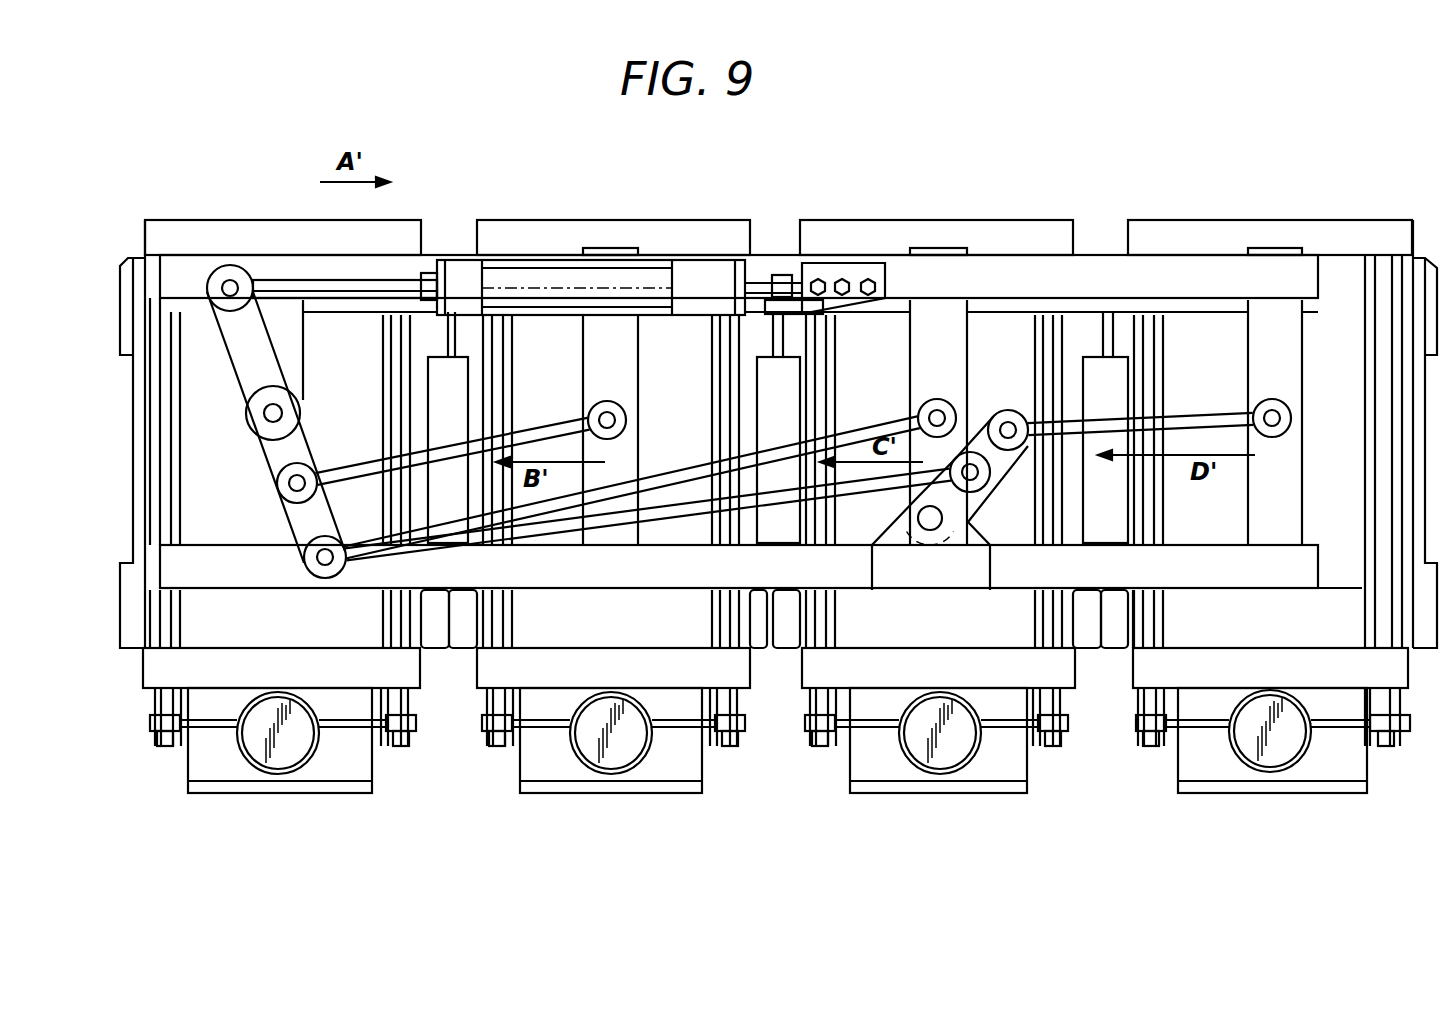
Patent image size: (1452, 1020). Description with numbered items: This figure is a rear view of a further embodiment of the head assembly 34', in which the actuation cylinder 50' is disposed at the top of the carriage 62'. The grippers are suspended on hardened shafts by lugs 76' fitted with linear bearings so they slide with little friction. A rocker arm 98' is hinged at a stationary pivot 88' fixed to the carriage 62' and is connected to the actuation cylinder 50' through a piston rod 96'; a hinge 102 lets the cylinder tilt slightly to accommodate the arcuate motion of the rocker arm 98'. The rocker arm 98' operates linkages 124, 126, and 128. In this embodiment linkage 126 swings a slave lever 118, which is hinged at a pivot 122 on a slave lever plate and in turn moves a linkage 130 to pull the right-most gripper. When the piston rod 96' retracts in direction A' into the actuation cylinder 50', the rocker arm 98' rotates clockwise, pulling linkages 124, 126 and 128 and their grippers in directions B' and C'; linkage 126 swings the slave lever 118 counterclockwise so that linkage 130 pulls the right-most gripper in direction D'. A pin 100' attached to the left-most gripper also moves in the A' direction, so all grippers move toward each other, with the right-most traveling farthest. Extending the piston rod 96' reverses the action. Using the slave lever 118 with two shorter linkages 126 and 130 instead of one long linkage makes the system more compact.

The head assembly 34' is at (879, 143).
The actuation cylinder 50' is at (583, 241).
The carriage 62' is at (739, 222).
The lugs 76' is at (778, 249).
The pivot 88' is at (186, 419).
The piston rod 96' is at (345, 233).
The rocker arm 98' is at (207, 435).
The pin 100' is at (173, 239).
The hinge 102 is at (953, 572).
The slave lever 118 is at (1008, 497).
The pivot 122 is at (930, 538).
The linkage 124 is at (540, 417).
The linkage 126 is at (562, 538).
The linkage 128 is at (675, 470).
The linkage 130 is at (1192, 412).